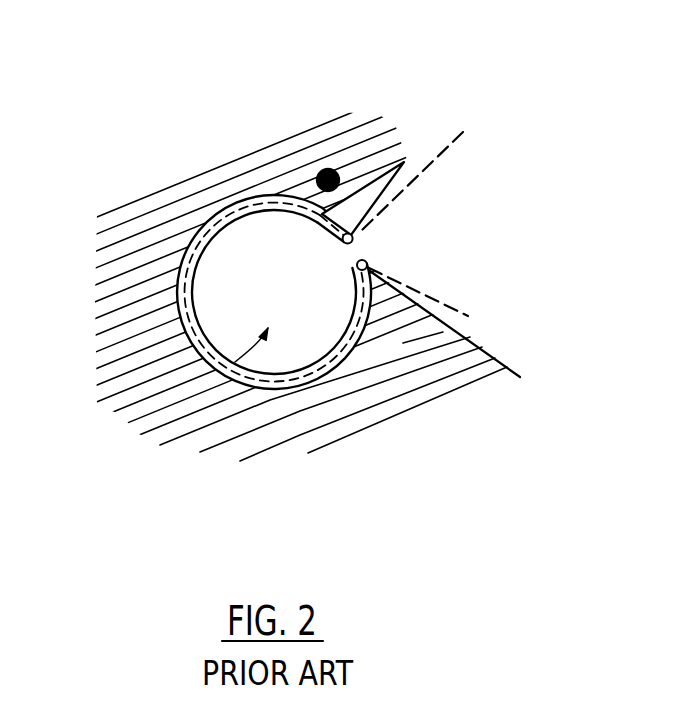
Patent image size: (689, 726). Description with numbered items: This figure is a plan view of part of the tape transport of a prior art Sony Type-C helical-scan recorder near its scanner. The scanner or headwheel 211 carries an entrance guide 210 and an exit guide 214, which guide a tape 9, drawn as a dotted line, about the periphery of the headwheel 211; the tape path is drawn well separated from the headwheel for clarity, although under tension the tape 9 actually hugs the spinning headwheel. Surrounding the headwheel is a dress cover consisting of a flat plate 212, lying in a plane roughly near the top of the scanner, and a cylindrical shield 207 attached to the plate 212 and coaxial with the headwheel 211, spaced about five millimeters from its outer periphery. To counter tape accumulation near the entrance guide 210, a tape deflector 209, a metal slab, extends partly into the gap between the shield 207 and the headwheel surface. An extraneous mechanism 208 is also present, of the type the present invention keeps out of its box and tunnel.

The cylindrical shield 207 is at (225, 207).
The mechanism 208 is at (336, 168).
The tape deflector 209 is at (350, 186).
The entrance guide 210 is at (367, 238).
The exit guide 214 is at (377, 257).
The tape 9 is at (462, 310).
The headwheel 211 is at (235, 362).
The plate 212 is at (350, 369).